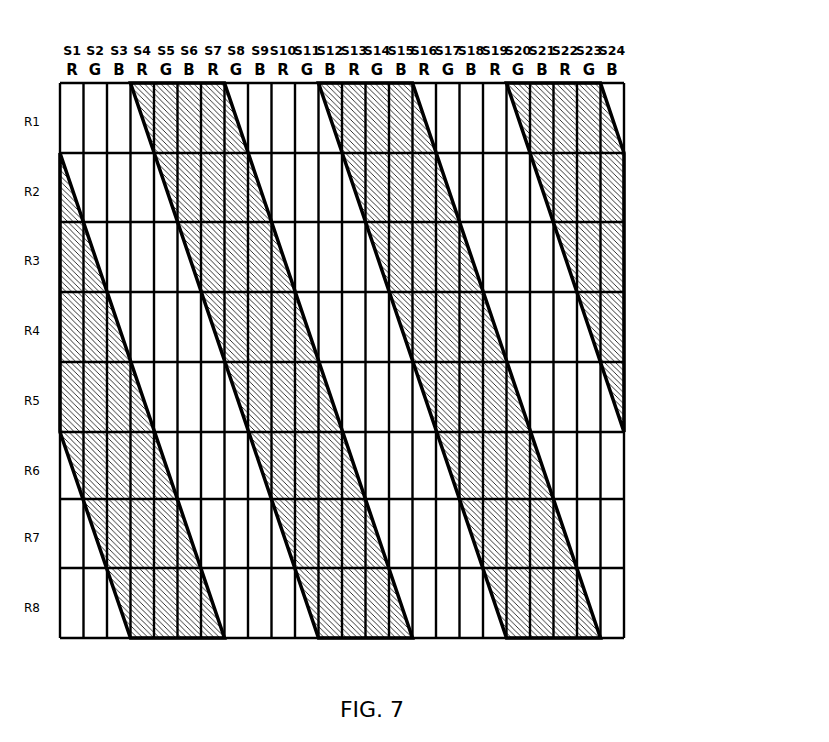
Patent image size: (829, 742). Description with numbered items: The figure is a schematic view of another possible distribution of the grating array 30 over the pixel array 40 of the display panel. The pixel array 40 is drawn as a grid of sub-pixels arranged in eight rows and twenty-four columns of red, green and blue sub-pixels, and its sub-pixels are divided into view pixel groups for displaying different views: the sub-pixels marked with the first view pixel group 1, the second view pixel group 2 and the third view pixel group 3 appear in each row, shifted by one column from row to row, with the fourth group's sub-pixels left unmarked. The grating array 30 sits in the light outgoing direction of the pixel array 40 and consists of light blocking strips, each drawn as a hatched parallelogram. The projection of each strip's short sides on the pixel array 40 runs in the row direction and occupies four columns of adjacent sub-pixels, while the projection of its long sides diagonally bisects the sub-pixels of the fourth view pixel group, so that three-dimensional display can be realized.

The grating array 30 is at (383, 360).
The pixel array 40 is at (567, 575).
The first view pixel group 1 is at (342, 360).
The second view pixel group 2 is at (342, 360).
The third view pixel group 3 is at (342, 360).